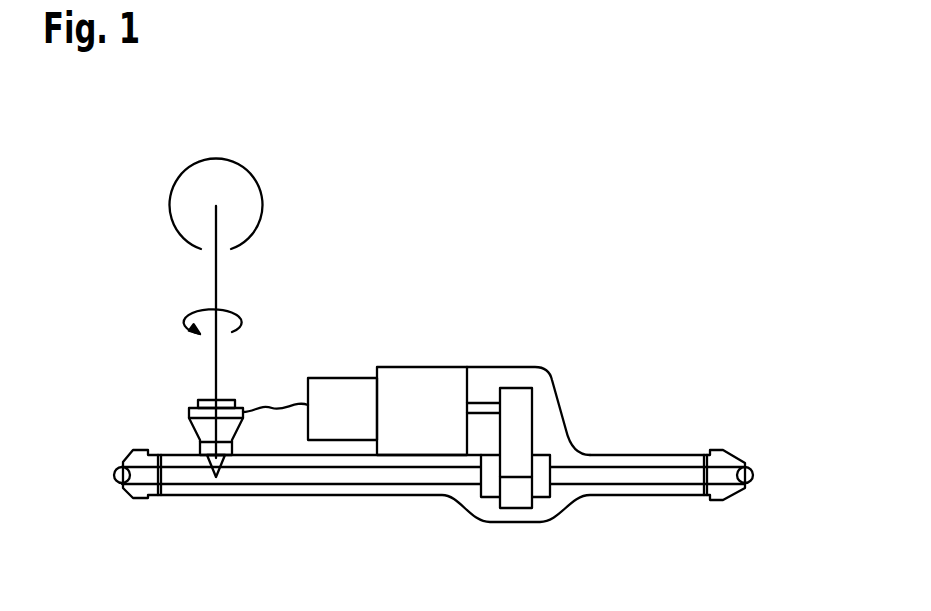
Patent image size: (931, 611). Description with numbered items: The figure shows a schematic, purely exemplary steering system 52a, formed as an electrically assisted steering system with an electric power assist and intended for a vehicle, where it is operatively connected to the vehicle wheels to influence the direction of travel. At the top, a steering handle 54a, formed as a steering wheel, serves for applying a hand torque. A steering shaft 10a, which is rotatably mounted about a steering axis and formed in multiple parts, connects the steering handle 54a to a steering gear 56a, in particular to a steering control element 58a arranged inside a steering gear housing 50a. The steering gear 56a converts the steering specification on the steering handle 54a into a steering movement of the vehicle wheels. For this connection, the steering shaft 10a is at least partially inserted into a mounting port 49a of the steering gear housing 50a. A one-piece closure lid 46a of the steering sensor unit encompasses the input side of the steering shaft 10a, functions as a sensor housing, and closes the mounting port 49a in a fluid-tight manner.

The steering shaft 10a is at (263, 319).
The closure lid 46a is at (180, 394).
The mounting port 49a is at (177, 410).
The steering gear housing 50a is at (288, 496).
The steering system 52a is at (633, 214).
The steering handle 54a is at (280, 183).
The steering gear 56a is at (603, 404).
The steering control element 58a is at (358, 478).